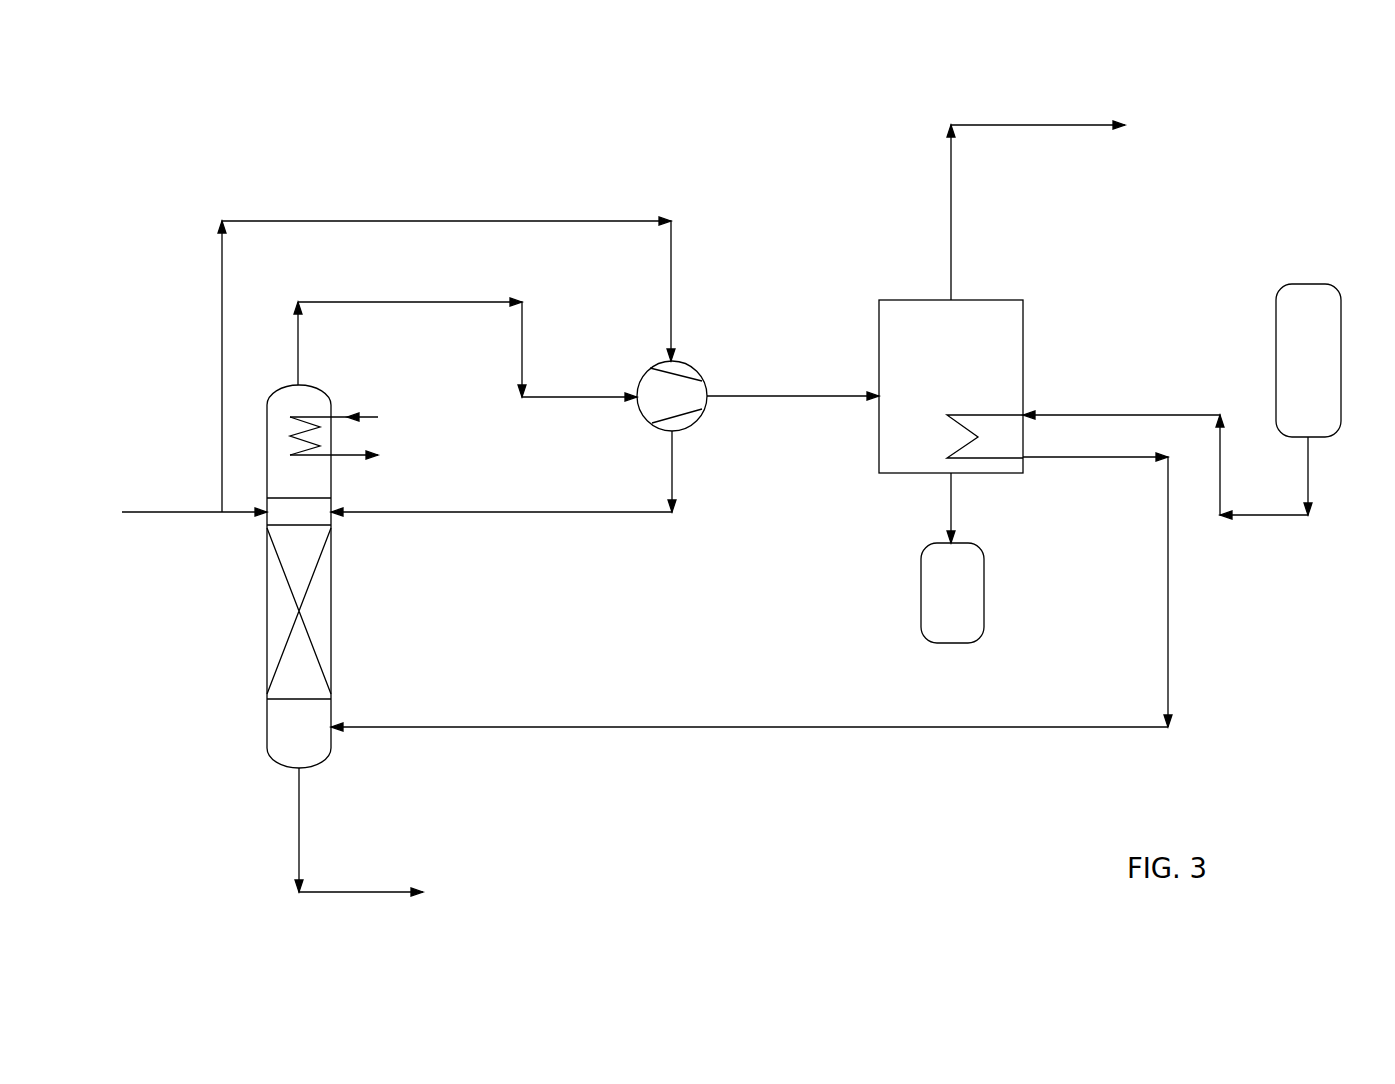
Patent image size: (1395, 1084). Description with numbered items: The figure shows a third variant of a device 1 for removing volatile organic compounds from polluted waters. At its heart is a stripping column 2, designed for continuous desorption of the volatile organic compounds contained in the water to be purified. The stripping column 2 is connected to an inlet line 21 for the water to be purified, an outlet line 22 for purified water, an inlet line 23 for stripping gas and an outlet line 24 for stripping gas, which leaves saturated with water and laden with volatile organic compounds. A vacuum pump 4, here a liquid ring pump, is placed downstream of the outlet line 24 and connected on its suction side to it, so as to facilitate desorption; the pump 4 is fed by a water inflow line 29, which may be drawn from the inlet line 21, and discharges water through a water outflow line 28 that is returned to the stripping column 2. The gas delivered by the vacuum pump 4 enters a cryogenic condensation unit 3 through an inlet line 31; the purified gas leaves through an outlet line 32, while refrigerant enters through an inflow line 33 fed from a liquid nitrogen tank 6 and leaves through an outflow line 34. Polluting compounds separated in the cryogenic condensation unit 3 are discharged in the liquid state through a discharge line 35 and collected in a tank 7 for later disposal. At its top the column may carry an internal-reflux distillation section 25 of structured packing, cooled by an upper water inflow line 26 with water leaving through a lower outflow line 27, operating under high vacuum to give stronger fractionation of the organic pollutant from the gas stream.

The device for removing volatile organic compounds 1 is at (181, 150).
The stripping column 2 is at (339, 578).
The cryogenic condensation unit 3 is at (1032, 334).
The vacuum pump 4 is at (653, 352).
The liquid nitrogen tank 6 is at (1347, 362).
The tank 7 is at (914, 593).
The inlet line for water to be purified 21 is at (178, 508).
The outlet line for purified water 22 is at (383, 885).
The inlet line for stripping gas 23 is at (383, 718).
The outlet line for stripping gas 24 is at (398, 295).
The distillation section 25 is at (288, 385).
The upper water inflow line 26 is at (368, 410).
The lower outflow line 27 is at (350, 460).
The water outflow line 28 is at (562, 505).
The water inflow line 29 is at (452, 215).
The inlet line for gas to be purified 31 is at (770, 388).
The outlet line for purified gas 32 is at (962, 245).
The inflow line for refrigerant 33 is at (1111, 410).
The outflow line for refrigerant 34 is at (1110, 465).
The discharge line 35 is at (949, 505).